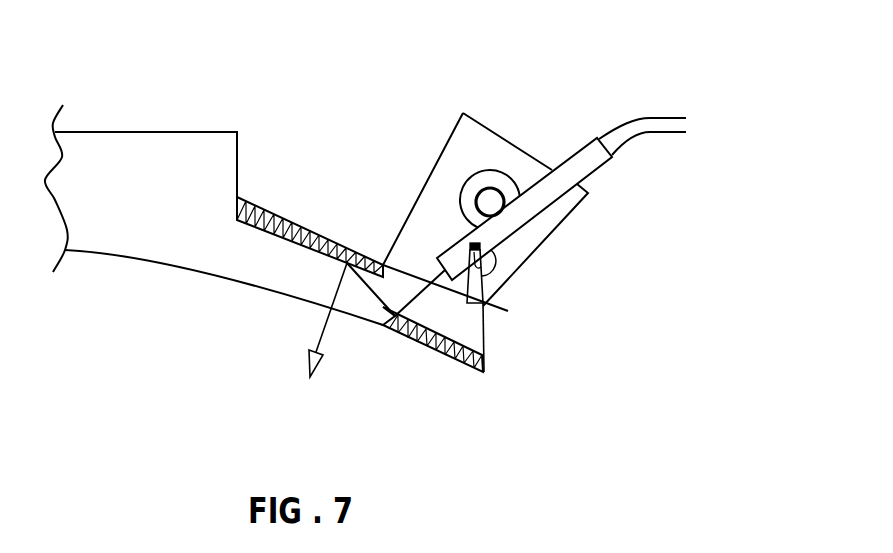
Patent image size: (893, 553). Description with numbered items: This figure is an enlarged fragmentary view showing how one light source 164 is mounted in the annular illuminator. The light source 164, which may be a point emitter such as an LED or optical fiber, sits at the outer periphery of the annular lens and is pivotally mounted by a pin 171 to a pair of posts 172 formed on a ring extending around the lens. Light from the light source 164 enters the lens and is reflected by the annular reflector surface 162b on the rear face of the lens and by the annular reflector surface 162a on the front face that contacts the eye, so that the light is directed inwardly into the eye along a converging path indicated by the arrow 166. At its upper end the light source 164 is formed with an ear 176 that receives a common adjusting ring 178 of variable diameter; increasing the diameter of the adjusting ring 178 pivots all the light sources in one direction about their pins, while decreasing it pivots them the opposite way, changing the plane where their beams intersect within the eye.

The annular reflector surface 162a is at (445, 356).
The annular reflector surface 162b is at (237, 217).
The light source 164 is at (563, 166).
The arrow 166 is at (320, 337).
The pin 171 is at (482, 264).
The post 172 is at (483, 305).
The ear 176 is at (472, 170).
The adjusting ring 178 is at (465, 216).